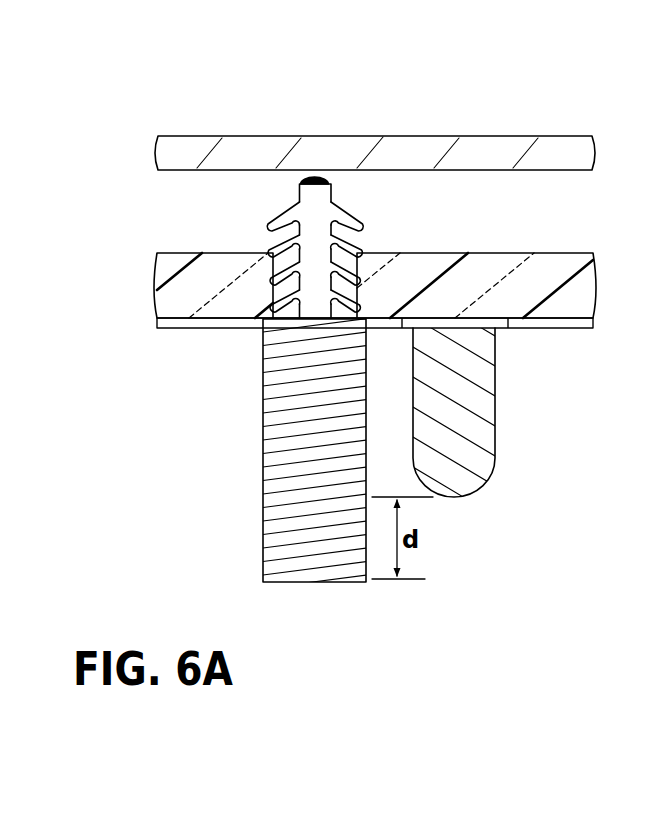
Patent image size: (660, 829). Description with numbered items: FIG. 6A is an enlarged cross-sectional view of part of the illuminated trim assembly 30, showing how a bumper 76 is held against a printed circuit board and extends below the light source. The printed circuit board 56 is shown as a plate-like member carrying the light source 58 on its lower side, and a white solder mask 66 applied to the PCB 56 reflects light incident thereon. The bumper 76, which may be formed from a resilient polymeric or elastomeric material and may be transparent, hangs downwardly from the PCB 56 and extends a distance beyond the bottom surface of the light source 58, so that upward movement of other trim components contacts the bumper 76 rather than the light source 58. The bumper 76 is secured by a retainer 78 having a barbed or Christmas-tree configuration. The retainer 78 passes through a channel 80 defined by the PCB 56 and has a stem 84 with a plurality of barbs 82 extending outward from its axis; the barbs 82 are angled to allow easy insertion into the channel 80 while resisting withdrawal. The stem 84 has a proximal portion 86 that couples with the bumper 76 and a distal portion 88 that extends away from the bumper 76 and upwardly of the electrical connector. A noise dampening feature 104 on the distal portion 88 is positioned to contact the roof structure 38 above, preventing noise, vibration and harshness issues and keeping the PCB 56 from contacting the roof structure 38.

The trim assembly 30 is at (352, 254).
The roof structure 38 is at (512, 143).
The printed circuit board 56 is at (538, 273).
The light source 58 is at (472, 398).
The white solder mask 66 is at (548, 323).
The bumper 76 is at (300, 473).
The retainer 78 is at (291, 258).
The channel 80 is at (288, 308).
The barbs 82 is at (278, 222).
The stem 84 is at (347, 250).
The proximal portion 86 is at (313, 320).
The distal portion 88 is at (319, 177).
The noise dampening feature 104 is at (310, 176).